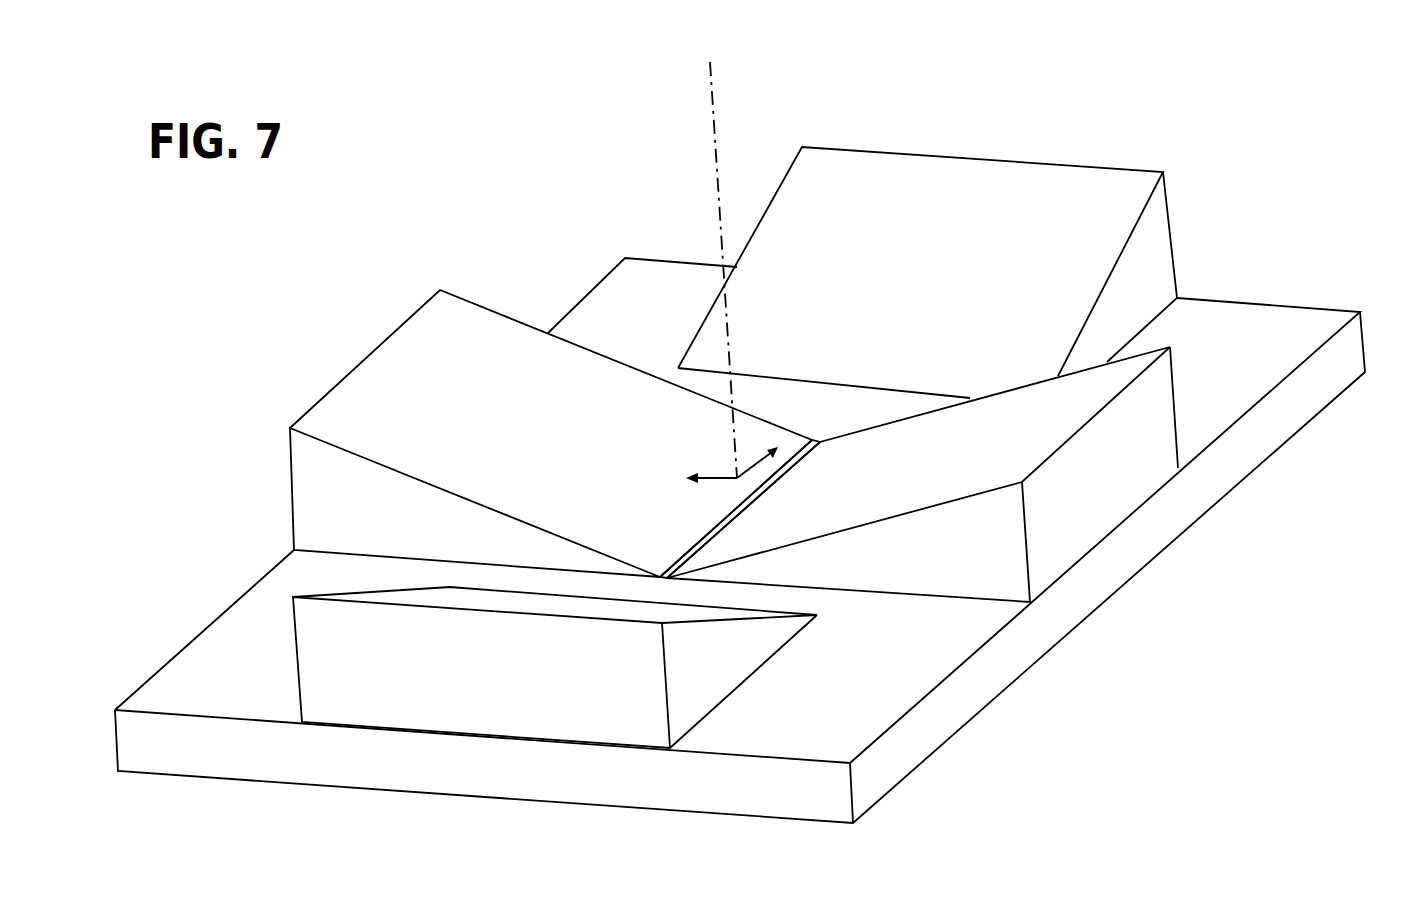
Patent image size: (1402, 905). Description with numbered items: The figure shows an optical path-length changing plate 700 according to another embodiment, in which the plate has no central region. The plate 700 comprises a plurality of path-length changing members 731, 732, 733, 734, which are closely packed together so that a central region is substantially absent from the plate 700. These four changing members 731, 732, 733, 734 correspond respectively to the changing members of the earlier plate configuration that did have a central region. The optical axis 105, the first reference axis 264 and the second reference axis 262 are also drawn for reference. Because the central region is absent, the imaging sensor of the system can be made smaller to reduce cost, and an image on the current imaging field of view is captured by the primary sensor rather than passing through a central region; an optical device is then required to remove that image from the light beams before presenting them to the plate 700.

The optical path-length changing plate 700 is at (1150, 756).
The path-length changing member 731 is at (327, 500).
The path-length changing member 732 is at (1150, 262).
The path-length changing member 733 is at (1098, 485).
The path-length changing member 734 is at (582, 678).
The optical axis 105 is at (712, 97).
The second reference axis 262 is at (719, 489).
The first reference axis 264 is at (767, 466).